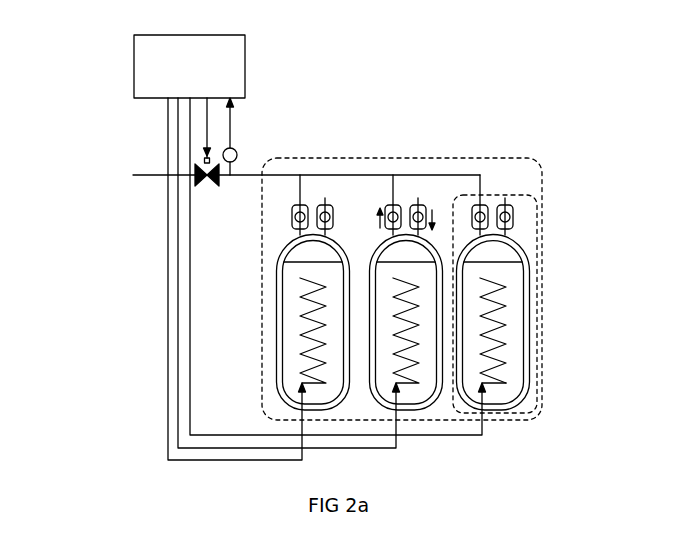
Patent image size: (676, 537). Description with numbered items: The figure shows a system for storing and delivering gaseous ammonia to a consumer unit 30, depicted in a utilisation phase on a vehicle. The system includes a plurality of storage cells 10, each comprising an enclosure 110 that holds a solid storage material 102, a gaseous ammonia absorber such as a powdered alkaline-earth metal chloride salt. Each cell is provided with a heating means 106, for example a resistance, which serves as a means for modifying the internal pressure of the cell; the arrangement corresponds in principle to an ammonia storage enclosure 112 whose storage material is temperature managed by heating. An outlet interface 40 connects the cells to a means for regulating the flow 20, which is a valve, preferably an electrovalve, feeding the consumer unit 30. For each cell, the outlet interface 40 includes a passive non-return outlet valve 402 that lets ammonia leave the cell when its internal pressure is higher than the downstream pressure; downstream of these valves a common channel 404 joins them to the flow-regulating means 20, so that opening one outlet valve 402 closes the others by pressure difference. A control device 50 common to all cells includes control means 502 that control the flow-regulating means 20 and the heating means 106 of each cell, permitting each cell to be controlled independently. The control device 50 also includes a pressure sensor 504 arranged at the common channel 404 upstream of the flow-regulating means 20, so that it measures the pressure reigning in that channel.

The storage cell 10 is at (542, 271).
The means for regulating the flow 20 is at (203, 182).
The consumer unit 30 is at (160, 186).
The outlet interface 40 is at (452, 166).
The control device 50 is at (246, 80).
The storage material 102 is at (513, 347).
The heating means 106 is at (500, 376).
The enclosure 110 is at (530, 310).
The ammonia storage enclosure 112 is at (480, 158).
The passive non-return outlet valve 402 is at (486, 212).
The common channel 404 is at (357, 175).
The control means 502 is at (148, 160).
The pressure sensor 504 is at (238, 155).